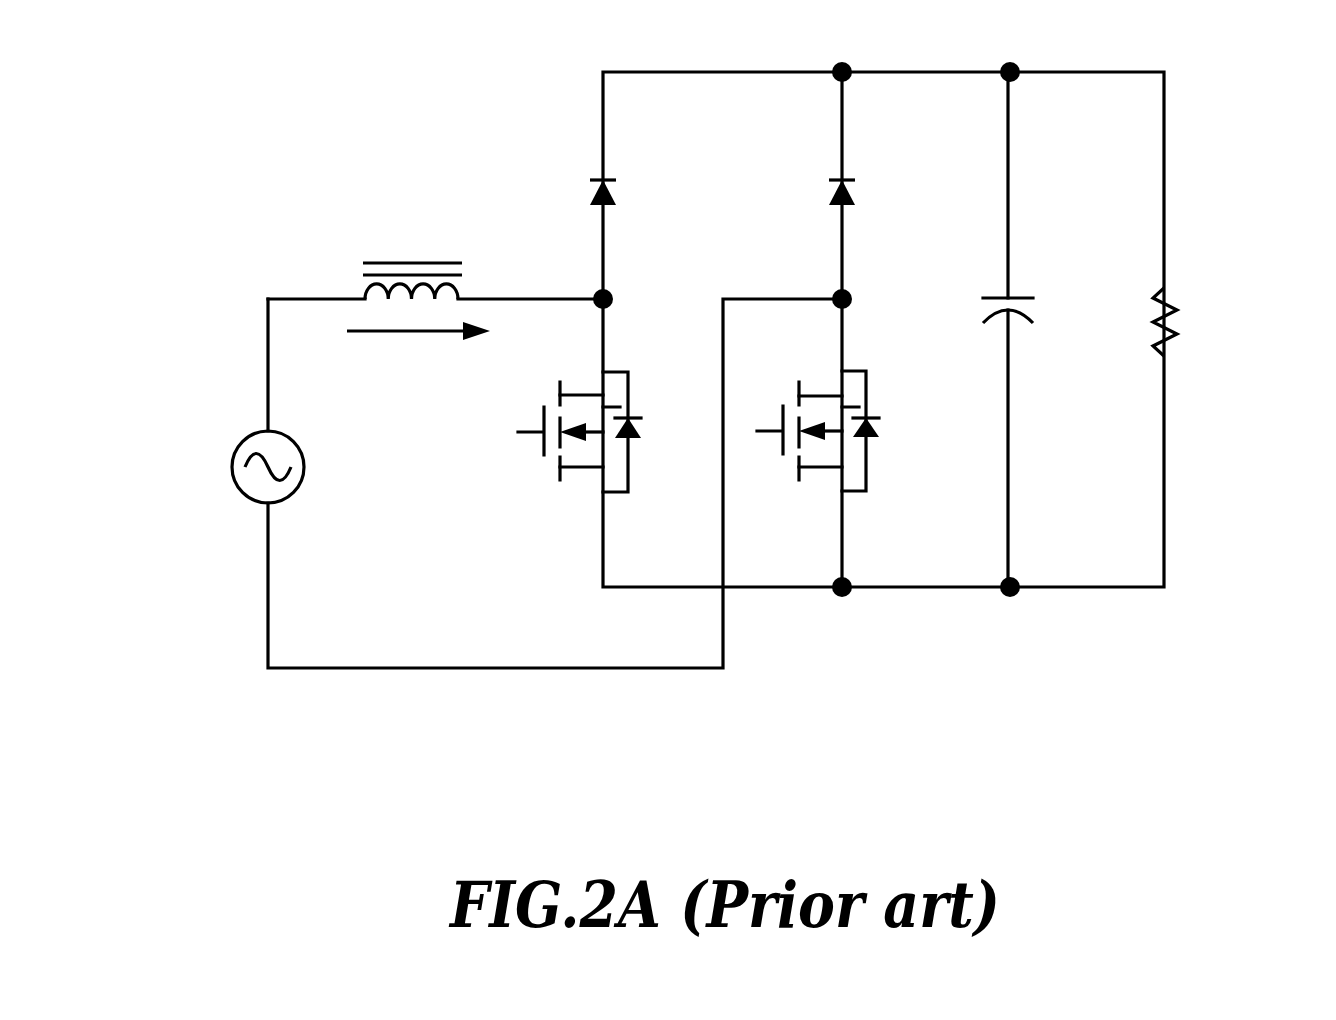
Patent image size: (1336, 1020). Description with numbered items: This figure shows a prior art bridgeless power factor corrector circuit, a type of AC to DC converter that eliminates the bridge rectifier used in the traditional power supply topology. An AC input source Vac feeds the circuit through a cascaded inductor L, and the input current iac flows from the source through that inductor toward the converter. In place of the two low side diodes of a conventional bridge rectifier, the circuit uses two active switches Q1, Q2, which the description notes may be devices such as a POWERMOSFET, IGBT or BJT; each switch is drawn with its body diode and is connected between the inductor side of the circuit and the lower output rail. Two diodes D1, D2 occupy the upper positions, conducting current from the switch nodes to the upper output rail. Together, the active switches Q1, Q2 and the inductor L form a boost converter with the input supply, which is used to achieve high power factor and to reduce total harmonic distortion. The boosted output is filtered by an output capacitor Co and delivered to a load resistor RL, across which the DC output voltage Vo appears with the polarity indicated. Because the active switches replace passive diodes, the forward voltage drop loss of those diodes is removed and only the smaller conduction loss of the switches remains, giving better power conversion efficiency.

The AC input voltage source Vac is at (224, 467).
The boost inductor L is at (412, 250).
The AC input current iac is at (418, 378).
The first boost diode D1 is at (654, 210).
The second boost diode D2 is at (891, 210).
The first switching transistor (MOSFET) Q1 is at (618, 443).
The second switching transistor (MOSFET) Q2 is at (860, 432).
The output capacitor Co is at (975, 329).
The load resistor RL is at (1128, 327).
The output voltage Vo is at (1233, 177).